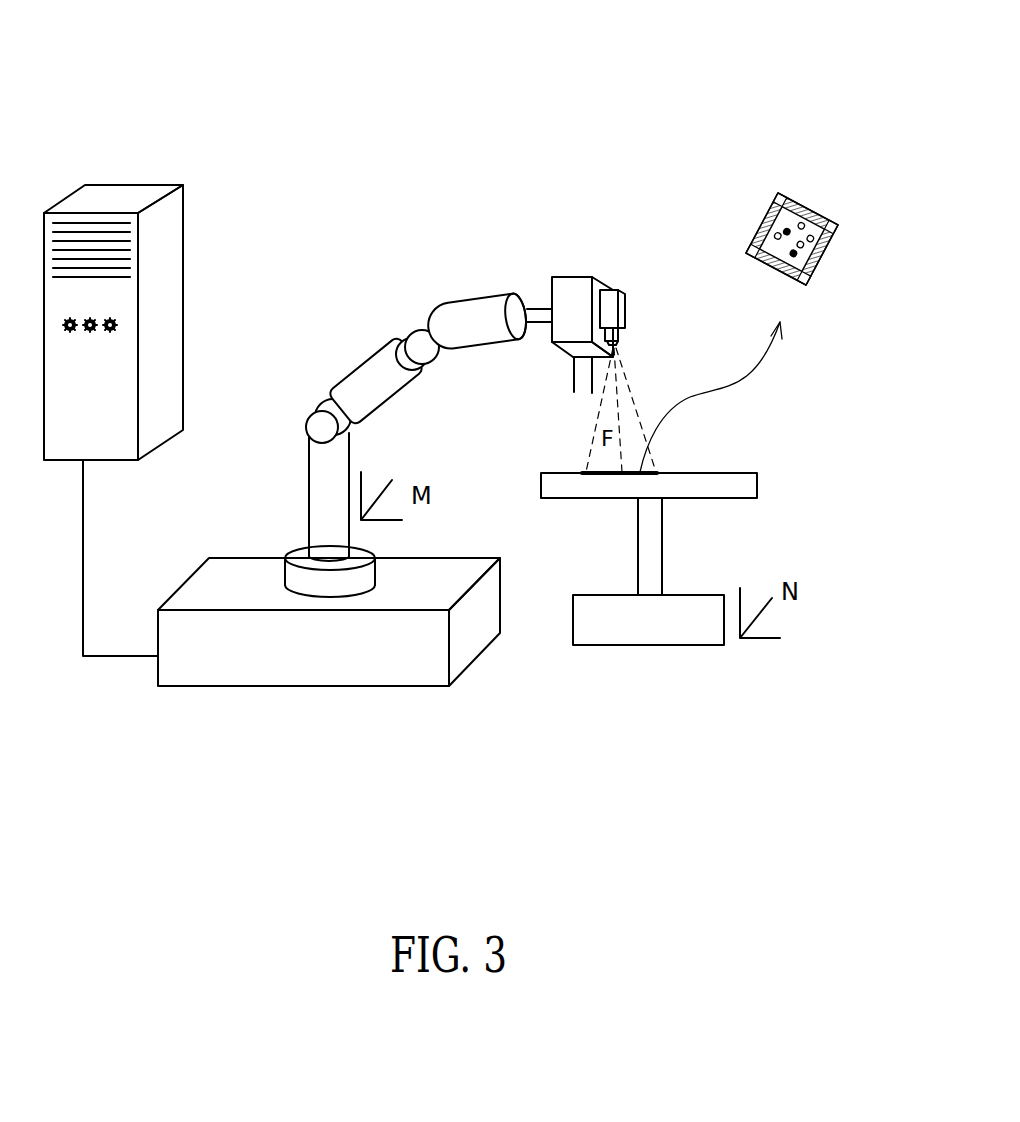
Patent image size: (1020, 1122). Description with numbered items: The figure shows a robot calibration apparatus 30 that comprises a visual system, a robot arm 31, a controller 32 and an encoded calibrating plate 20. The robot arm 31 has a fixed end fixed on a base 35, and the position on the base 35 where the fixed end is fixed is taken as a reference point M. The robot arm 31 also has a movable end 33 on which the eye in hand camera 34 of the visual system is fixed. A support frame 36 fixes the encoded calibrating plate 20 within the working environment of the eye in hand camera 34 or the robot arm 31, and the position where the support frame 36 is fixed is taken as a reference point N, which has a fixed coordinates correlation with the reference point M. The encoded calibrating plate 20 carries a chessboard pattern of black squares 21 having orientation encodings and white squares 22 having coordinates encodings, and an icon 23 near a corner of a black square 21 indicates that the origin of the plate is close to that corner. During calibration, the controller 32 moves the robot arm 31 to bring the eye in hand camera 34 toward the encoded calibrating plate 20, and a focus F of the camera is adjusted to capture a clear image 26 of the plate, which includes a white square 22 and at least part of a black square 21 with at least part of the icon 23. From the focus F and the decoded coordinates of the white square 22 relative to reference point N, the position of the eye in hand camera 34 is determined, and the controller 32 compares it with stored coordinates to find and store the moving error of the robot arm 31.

The robot calibration apparatus 30 is at (606, 66).
The controller 32 is at (186, 225).
The robot arm 31 is at (359, 362).
The movable end 33 is at (562, 276).
The eye in hand camera 34 is at (625, 303).
The base 35 is at (243, 562).
The encoded calibrating plate 20 is at (562, 472).
The image 26 is at (605, 476).
The support frame 36 is at (663, 560).
The black square 21 is at (807, 203).
The white square 22 is at (800, 274).
The icon 23 is at (765, 260).